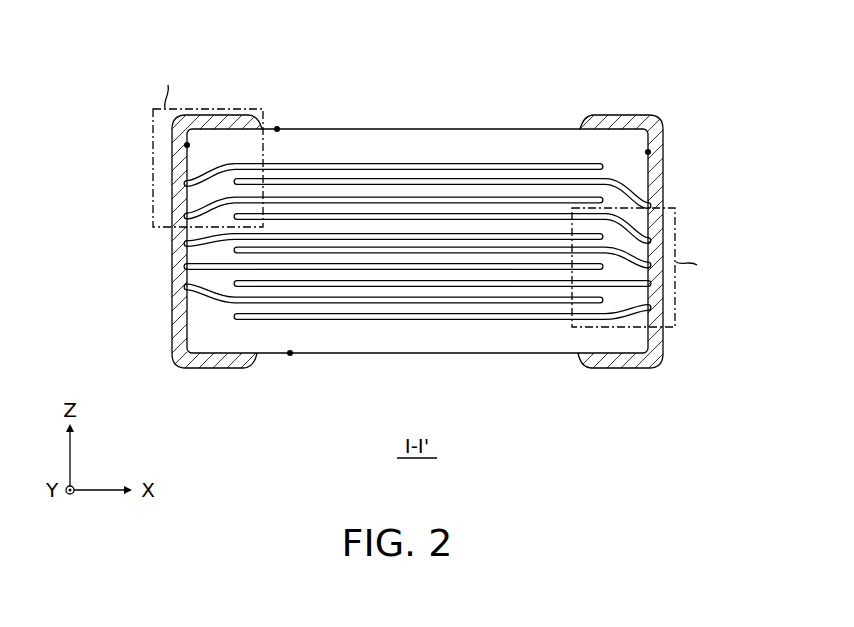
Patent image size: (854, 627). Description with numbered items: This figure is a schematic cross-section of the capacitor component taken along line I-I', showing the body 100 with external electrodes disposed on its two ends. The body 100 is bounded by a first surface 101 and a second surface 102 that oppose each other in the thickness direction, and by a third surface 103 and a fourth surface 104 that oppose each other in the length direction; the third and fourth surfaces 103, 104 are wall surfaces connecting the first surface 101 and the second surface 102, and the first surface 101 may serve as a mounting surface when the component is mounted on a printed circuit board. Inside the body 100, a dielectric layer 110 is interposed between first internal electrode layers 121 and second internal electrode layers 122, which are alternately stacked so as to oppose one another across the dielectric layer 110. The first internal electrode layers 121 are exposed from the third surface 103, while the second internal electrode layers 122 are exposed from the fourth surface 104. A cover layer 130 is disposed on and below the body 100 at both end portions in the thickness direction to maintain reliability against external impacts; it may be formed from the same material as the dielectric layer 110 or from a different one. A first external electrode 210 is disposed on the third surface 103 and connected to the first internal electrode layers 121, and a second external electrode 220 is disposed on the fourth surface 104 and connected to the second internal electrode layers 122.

The body 100 is at (427, 230).
The first surface 101 is at (290, 355).
The second surface 102 is at (277, 128).
The third surface 103 is at (186, 145).
The fourth surface 104 is at (650, 152).
The dielectric layer 110 is at (447, 172).
The first internal electrode layer 121 is at (330, 163).
The second internal electrode layer 122 is at (385, 180).
The cover layer 130 is at (512, 135).
The first external electrode 210 is at (178, 265).
The second external electrode 220 is at (660, 186).